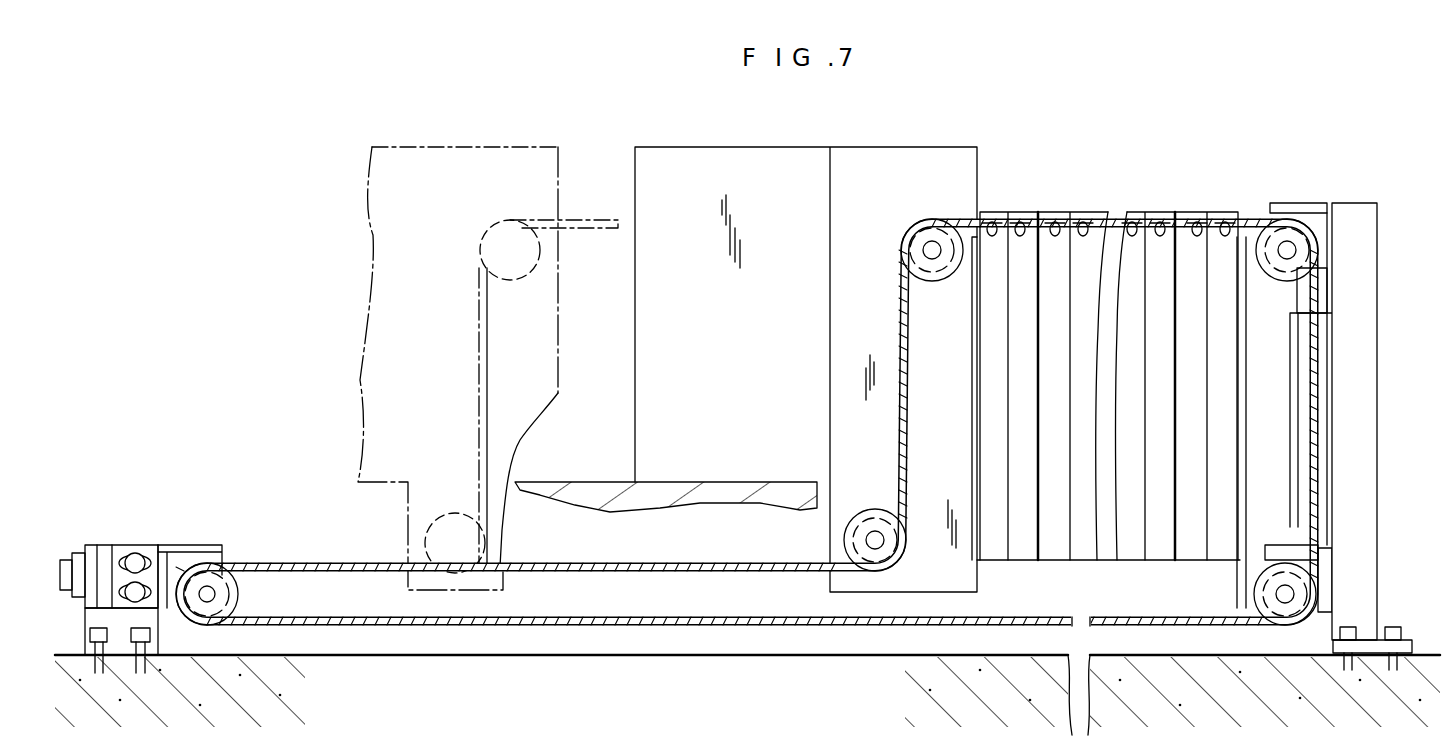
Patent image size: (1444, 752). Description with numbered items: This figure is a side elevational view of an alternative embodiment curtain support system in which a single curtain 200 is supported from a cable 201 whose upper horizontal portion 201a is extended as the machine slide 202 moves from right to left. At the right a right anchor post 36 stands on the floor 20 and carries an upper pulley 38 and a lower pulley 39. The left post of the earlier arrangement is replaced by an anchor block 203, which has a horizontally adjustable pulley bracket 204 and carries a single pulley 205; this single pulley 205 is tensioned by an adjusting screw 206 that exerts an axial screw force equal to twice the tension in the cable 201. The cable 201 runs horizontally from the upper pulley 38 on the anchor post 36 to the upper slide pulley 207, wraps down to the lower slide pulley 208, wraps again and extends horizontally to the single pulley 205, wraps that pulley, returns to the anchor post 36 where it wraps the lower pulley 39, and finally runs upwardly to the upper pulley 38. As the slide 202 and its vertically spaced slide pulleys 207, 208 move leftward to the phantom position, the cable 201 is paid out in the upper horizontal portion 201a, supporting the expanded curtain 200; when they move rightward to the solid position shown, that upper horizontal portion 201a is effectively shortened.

The floor 20 is at (340, 655).
The right anchor post 36 is at (1378, 285).
The upper pulley 38 is at (1300, 225).
The lower pulley 39 is at (1285, 620).
The curtain 200 is at (1035, 212).
The cable 201 is at (690, 563).
The upper horizontal portion 201a is at (1137, 212).
The machine slide 202 is at (700, 347).
The anchor block 203 is at (160, 635).
The pulley bracket 204 is at (190, 545).
The single pulley 205 is at (238, 590).
The adjusting screw 206 is at (66, 558).
The upper slide pulley 207 is at (928, 282).
The lower slide pulley 208 is at (870, 510).